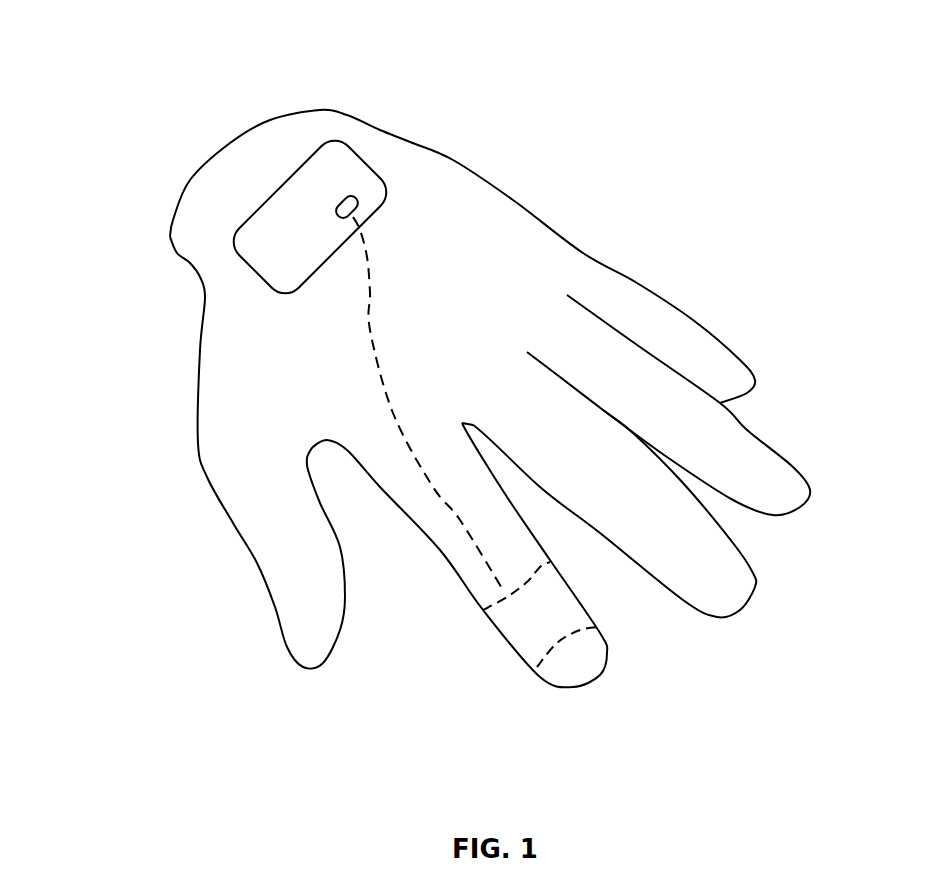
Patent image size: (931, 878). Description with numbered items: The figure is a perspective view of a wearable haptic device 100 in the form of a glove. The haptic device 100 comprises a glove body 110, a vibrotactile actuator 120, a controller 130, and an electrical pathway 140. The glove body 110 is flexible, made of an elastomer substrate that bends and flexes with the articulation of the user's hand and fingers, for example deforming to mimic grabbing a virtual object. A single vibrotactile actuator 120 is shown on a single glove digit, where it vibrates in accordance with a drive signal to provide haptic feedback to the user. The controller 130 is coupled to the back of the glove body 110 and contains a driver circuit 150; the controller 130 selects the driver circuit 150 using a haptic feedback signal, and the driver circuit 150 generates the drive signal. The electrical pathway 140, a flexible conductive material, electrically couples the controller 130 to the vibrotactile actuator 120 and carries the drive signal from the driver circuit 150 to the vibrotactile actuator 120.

The haptic device 100 is at (583, 31).
The glove body 110 is at (203, 292).
The vibrotactile actuator 120 is at (538, 612).
The controller 130 is at (262, 228).
The electrical pathway 140 is at (367, 329).
The driver circuit 150 is at (353, 193).